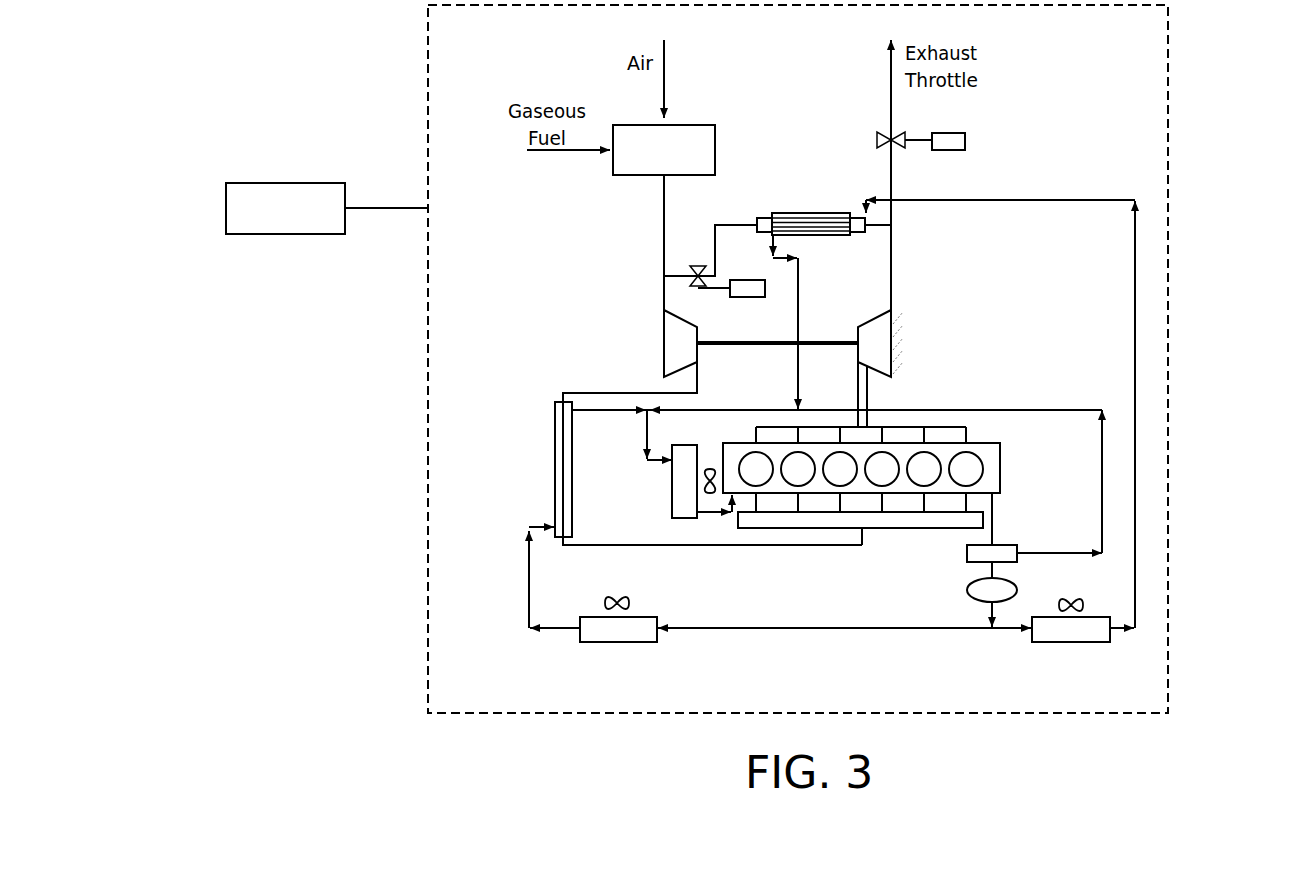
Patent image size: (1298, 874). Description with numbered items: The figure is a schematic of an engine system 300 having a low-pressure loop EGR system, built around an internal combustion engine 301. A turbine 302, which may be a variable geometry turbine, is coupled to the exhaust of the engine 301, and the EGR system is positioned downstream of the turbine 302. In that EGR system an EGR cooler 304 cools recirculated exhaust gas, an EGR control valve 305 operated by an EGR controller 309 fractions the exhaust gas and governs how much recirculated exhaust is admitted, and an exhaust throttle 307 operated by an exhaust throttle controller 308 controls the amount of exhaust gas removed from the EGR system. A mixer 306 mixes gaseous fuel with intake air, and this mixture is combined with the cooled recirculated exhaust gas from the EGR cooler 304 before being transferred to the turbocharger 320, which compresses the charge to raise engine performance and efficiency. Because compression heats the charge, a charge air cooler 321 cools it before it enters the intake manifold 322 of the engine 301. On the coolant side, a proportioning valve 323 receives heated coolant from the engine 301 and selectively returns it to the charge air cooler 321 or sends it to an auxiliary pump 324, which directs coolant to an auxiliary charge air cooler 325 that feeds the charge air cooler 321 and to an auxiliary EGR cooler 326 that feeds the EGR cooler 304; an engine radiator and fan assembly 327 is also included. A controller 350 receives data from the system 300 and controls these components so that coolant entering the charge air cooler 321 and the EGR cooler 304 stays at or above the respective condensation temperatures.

The engine system 300 is at (1250, 74).
The internal combustion engine 301 is at (997, 450).
The turbine 302 is at (867, 326).
The EGR cooler 304 is at (853, 237).
The EGR control valve 305 is at (696, 266).
The mixer 306 is at (703, 130).
The exhaust throttle 307 is at (875, 142).
The exhaust throttle controller 308 is at (965, 140).
The EGR controller 309 is at (760, 298).
The turbocharger 320 is at (667, 320).
The charge air cooler 321 is at (555, 407).
The intake manifold 322 is at (768, 529).
The proportioning valve 323 is at (967, 553).
The auxiliary pump 324 is at (967, 589).
The auxiliary charge air cooler 325 is at (646, 643).
The auxiliary EGR cooler 326 is at (1100, 643).
The engine radiator and fan assembly 327 is at (672, 518).
The controller 350 is at (234, 190).